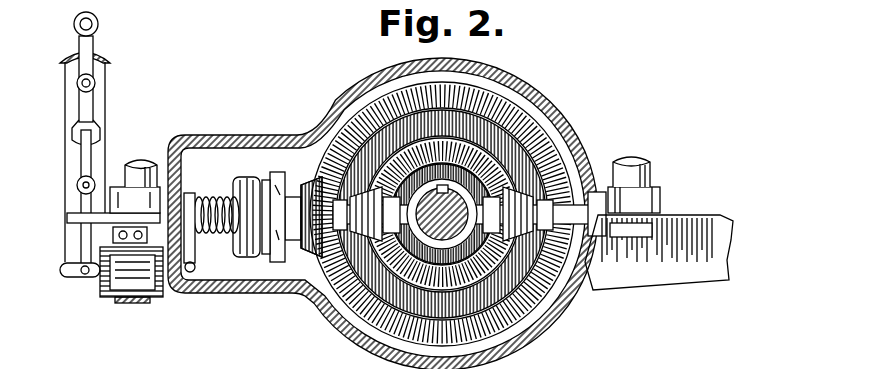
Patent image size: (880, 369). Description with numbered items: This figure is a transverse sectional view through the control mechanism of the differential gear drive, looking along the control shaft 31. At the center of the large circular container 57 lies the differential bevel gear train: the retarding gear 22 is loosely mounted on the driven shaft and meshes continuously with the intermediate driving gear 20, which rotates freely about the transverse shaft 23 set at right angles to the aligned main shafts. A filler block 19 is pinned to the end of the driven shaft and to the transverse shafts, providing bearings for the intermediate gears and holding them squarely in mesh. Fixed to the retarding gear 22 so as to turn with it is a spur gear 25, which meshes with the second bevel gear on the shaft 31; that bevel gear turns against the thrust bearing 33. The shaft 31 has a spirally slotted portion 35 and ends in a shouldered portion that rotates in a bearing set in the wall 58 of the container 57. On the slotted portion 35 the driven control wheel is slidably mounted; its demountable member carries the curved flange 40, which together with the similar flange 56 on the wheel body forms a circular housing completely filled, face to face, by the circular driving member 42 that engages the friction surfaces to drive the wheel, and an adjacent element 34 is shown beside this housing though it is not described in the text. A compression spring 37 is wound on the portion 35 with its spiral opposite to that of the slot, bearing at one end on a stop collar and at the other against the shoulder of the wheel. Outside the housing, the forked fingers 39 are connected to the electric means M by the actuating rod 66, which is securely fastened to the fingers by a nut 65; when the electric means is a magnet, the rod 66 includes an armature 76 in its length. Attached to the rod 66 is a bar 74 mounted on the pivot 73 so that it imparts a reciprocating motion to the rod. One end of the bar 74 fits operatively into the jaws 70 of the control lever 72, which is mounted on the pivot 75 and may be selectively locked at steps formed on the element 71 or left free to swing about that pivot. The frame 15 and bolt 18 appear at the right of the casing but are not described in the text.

The frame 15 is at (715, 254).
The bolt 18 is at (652, 173).
The filler block 19 is at (555, 142).
The intermediate driving gear 20 is at (555, 302).
The retarding gear 22 is at (550, 318).
The transverse shaft 23 is at (570, 170).
The spur gear 25 is at (530, 125).
The shaft 31 is at (300, 250).
The thrust bearing 33 is at (292, 245).
The clutch disc 34 is at (277, 176).
The spirally slotted portion 35 is at (222, 195).
The compression spring 37 is at (196, 236).
The forked fingers 39 is at (196, 199).
The curved flange 40 is at (190, 291).
The driving member 42 is at (245, 180).
The curved flange 56 is at (278, 180).
The container 57 is at (338, 100).
The wall 58 is at (120, 188).
The nut 65 is at (200, 287).
The actuating rod 66 is at (106, 276).
The jaws 70 is at (100, 128).
The element with steps 71 is at (100, 52).
The control lever 72 is at (90, 110).
The pivot 73 is at (80, 192).
The bar 74 is at (92, 150).
The pivot 75 is at (95, 83).
The armature 76 is at (128, 303).
The electric means M is at (112, 302).